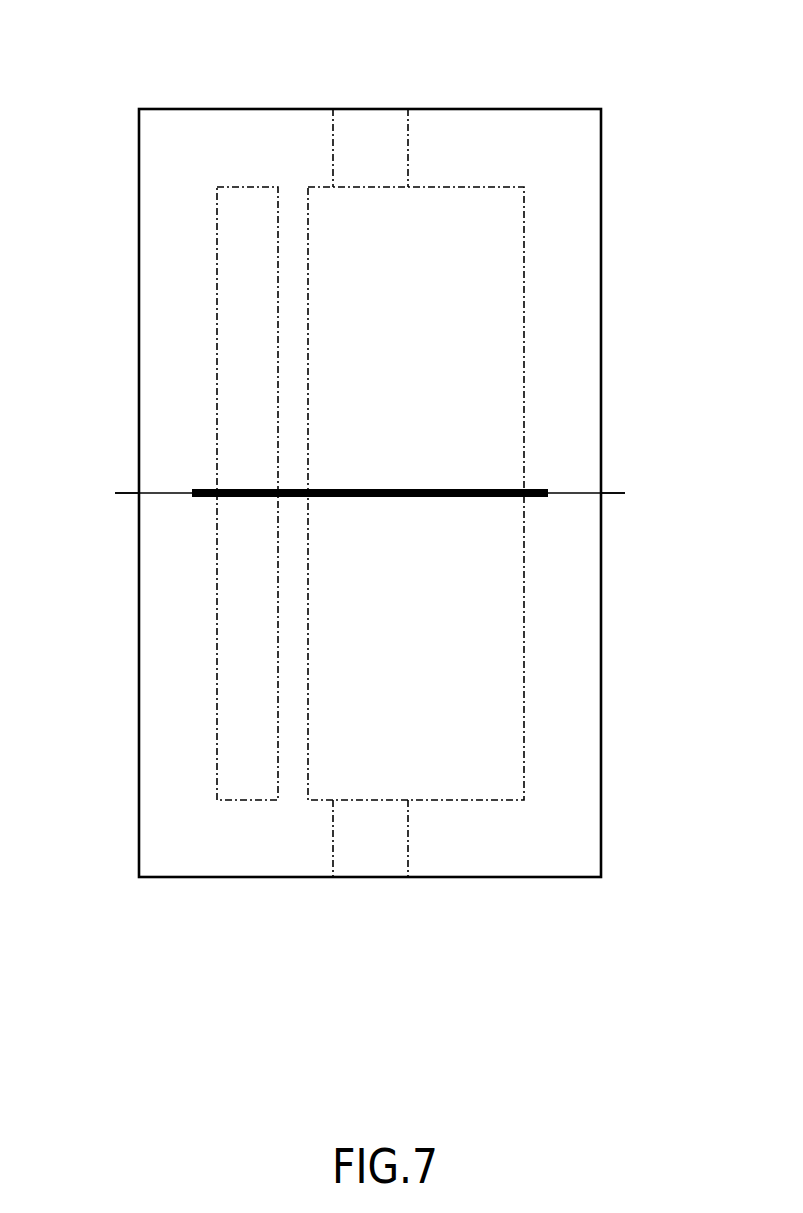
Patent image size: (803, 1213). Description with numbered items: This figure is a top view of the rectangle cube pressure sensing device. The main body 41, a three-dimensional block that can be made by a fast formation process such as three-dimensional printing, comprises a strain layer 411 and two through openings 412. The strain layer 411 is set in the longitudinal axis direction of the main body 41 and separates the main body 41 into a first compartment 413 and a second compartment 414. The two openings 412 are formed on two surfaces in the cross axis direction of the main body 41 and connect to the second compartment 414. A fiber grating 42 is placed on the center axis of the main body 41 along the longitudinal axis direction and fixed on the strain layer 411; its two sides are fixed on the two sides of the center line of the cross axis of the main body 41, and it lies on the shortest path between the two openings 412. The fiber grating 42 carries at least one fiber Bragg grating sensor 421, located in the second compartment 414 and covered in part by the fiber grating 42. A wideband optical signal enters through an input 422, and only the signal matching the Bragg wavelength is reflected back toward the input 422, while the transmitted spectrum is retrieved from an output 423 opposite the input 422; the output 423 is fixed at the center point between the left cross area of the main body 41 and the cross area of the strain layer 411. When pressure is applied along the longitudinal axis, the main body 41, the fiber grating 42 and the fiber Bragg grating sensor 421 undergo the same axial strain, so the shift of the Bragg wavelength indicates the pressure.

The main body 41 is at (212, 850).
The strain layer 411 is at (297, 642).
The through openings 412 is at (369, 135).
The first compartment 413 is at (247, 713).
The second compartment 414 is at (493, 712).
The fiber grating 42 is at (575, 490).
The fiber Bragg grating sensor 421 is at (424, 489).
The input 422 is at (612, 496).
The output 423 is at (125, 496).